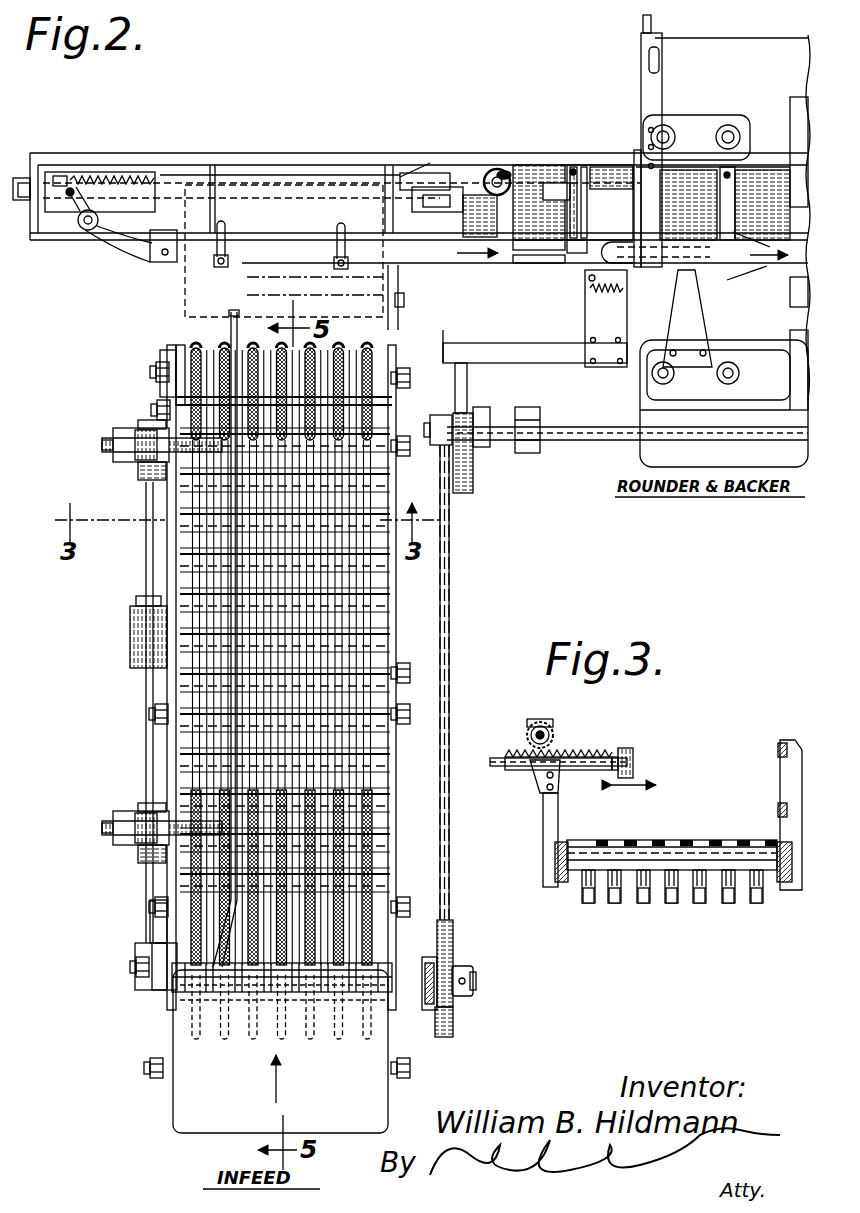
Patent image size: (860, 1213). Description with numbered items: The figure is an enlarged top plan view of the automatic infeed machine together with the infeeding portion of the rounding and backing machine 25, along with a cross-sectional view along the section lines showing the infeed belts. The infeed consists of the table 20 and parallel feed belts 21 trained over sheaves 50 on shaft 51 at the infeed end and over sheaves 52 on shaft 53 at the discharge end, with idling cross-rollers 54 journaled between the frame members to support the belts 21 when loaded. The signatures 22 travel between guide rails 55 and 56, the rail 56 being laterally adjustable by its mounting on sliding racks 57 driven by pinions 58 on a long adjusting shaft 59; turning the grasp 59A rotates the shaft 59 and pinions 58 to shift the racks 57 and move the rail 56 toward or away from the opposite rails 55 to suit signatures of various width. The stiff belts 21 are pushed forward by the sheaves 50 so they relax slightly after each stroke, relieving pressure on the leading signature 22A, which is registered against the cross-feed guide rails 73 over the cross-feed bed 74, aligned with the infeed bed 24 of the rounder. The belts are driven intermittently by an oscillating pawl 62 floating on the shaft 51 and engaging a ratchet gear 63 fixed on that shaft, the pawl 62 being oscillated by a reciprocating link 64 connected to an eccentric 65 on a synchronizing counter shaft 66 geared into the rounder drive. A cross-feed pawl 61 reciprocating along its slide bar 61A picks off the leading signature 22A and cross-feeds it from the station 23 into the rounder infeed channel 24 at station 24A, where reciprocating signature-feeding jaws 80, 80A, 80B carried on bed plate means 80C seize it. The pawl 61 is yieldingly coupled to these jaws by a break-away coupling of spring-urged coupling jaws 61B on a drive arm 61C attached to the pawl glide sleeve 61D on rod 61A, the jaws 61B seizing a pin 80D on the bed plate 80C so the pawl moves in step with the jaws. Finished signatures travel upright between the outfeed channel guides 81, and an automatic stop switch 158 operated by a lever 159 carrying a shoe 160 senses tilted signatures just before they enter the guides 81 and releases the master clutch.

In FIG. 2, the table 20 is at (237, 1100).
In FIG. 2, the feed belts 21 is at (348, 656).
In FIG. 3, the signatures 22 is at (757, 895).
In FIG. 2, the leading signature 22A is at (326, 250).
In FIG. 2, the station 23 is at (300, 222).
In FIG. 2, the rounder infeed channel 24 is at (428, 250).
In FIG. 2, the station 24A is at (438, 268).
In FIG. 2, the rounding and backing machine 25 is at (636, 148).
In FIG. 2, the sheaves 50 is at (249, 1024).
In FIG. 2, the shaft 51 is at (143, 968).
In FIG. 2, the sheaves 52 is at (178, 355).
In FIG. 2, the shaft 53 is at (160, 372).
In FIG. 3, the shaft 53 is at (609, 882).
In FIG. 2, the idling cross-rollers 54 is at (183, 577).
In FIG. 3, the idling cross-rollers 54 is at (597, 853).
In FIG. 2, the guide rails 55 is at (398, 403).
In FIG. 3, the guide rails 55 is at (778, 810).
In FIG. 2, the guide rail 56 is at (230, 343).
In FIG. 3, the guide rail 56 is at (630, 748).
In FIG. 2, the sliding racks 57 is at (108, 448).
In FIG. 3, the sliding racks 57 is at (579, 753).
In FIG. 2, the pinions 58 is at (134, 468).
In FIG. 3, the pinions 58 is at (528, 738).
In FIG. 2, the adjusting shaft 59 is at (146, 732).
In FIG. 3, the adjusting shaft 59 is at (553, 732).
In FIG. 2, the grasp 59A is at (134, 638).
In FIG. 2, the cross-feed pawl 61 is at (148, 256).
In FIG. 2, the slide bar 61A is at (182, 178).
In FIG. 2, the coupling jaws 61B is at (492, 170).
In FIG. 2, the drive arm 61C is at (425, 172).
In FIG. 2, the pawl glide sleeve 61D is at (112, 173).
In FIG. 2, the oscillating pawl 62 is at (457, 998).
In FIG. 2, the ratchet gear 63 is at (450, 944).
In FIG. 2, the reciprocating link 64 is at (450, 526).
In FIG. 2, the eccentric 65 is at (471, 478).
In FIG. 2, the synchronizing counter shaft 66 is at (568, 440).
In FIG. 2, the cross-feed guide rails 73 is at (68, 238).
In FIG. 2, the cross-feed bed 74 is at (367, 250).
In FIG. 2, the signature-feeding jaws 80 is at (537, 247).
In FIG. 2, the signature-feeding jaw 80A is at (580, 254).
In FIG. 2, the signature-feeding jaw 80B is at (615, 270).
In FIG. 2, the bed plate means 80C is at (563, 168).
In FIG. 2, the pin 80D is at (505, 168).
In FIG. 2, the outfeed channel guides 81 is at (748, 240).
In FIG. 2, the automatic stop switch 158 is at (642, 46).
In FIG. 2, the lever 159 is at (656, 213).
In FIG. 2, the shoe 160 is at (605, 263).